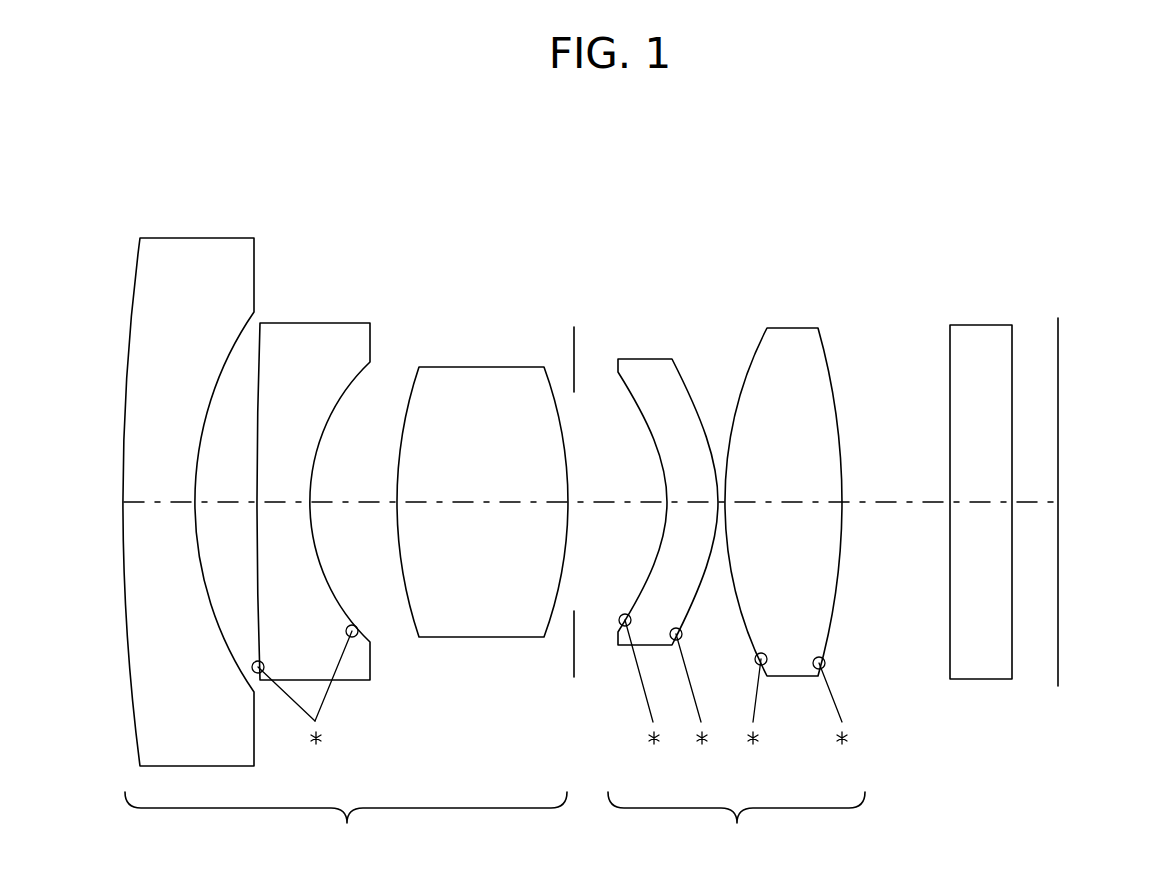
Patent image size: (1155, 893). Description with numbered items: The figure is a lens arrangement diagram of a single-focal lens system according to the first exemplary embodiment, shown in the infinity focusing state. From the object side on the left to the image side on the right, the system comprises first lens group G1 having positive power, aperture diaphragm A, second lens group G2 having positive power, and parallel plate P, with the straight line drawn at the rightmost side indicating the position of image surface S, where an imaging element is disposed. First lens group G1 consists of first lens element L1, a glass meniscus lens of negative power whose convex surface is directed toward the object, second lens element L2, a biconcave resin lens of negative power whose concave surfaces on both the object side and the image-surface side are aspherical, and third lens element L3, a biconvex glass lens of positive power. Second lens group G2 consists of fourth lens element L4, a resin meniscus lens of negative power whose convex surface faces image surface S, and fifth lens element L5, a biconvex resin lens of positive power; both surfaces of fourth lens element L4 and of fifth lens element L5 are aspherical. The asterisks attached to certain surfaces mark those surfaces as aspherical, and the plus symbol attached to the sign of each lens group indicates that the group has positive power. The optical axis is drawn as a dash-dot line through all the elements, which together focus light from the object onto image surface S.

The first lens element L1 is at (187, 249).
The second lens element L2 is at (305, 340).
The third lens element L3 is at (475, 383).
The aperture diaphragm A is at (574, 327).
The fourth lens element L4 is at (645, 368).
The fifth lens element L5 is at (790, 340).
The parallel plate P is at (976, 335).
The image surface S is at (1058, 350).
The first lens group G1 is at (346, 828).
The second lens group G2 is at (736, 828).